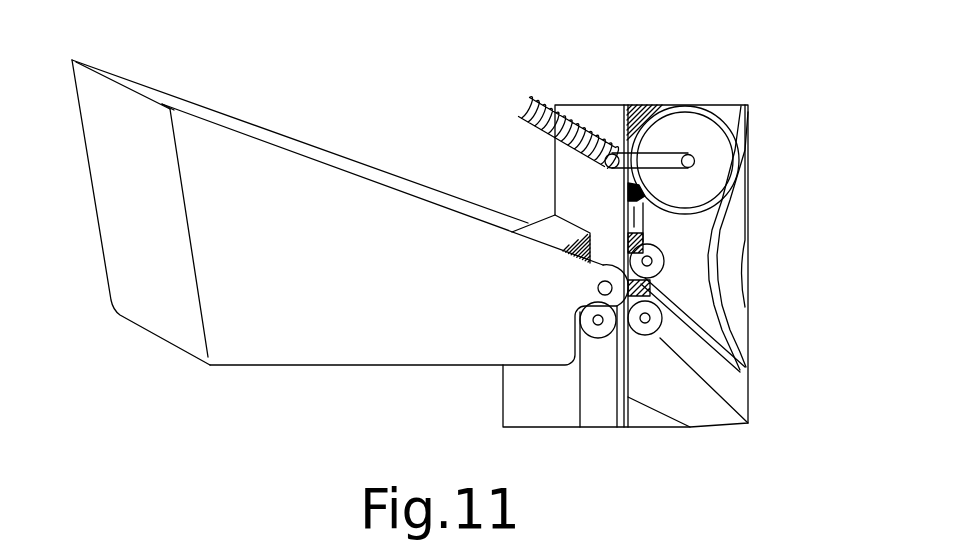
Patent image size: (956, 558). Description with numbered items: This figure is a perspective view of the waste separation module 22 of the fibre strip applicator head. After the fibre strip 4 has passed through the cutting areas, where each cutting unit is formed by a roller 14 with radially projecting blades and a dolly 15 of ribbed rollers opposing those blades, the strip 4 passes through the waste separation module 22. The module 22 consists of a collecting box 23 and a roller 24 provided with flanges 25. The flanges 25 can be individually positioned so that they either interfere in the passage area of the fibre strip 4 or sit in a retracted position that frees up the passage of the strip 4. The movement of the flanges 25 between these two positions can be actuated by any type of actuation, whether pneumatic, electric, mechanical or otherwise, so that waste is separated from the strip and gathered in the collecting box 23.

The fibre strip 4 is at (607, 218).
The roller 14 is at (693, 132).
The dolly 15 is at (587, 135).
The waste separation module 22 is at (520, 175).
The collecting box 23 is at (273, 138).
The roller 24 is at (655, 257).
The flanges 25 is at (630, 283).